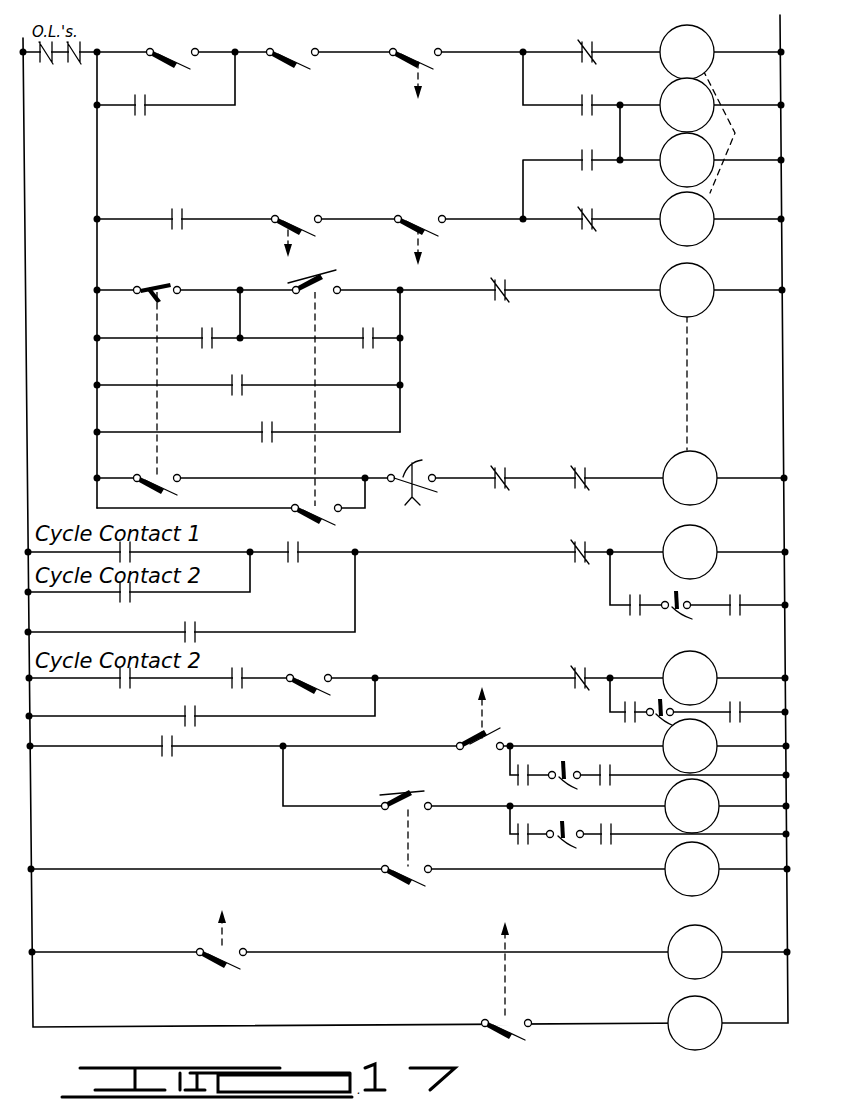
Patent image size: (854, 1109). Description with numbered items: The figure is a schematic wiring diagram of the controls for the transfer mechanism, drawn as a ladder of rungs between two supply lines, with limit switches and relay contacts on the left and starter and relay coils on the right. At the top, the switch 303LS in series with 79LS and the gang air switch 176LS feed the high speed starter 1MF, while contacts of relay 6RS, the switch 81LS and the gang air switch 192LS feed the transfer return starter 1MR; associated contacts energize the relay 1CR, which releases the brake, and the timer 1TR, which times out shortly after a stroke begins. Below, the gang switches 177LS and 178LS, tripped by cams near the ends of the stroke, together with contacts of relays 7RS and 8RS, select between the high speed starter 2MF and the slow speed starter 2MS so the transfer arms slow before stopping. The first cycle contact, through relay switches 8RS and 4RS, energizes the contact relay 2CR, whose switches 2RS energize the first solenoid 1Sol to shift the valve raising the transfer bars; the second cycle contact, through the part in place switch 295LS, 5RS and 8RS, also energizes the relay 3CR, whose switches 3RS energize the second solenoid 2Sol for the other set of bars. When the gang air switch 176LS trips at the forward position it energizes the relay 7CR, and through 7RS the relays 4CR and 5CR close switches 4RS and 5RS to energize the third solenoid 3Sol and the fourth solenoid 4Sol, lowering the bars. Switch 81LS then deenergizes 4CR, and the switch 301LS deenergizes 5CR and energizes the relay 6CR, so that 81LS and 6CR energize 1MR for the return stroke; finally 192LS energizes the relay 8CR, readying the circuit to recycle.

The limit switch 303LS is at (168, 39).
The limit switch 79LS is at (290, 37).
The gang air switch 176LS is at (413, 33).
The gang switch 81LS is at (295, 204).
The gang air switch 192LS is at (418, 200).
The gang switch 177LS is at (153, 276).
The gang switch 178LS is at (280, 278).
The part in place switch 295LS is at (312, 664).
The switch 301LS is at (385, 796).
The timer 1TR is at (548, 319).
The transfer return starter 1MR is at (588, 32).
The high speed starter 1MF is at (590, 86).
The brake release relay 1CR is at (687, 105).
The high speed starter 2MF is at (687, 290).
The slow speed starter 2MS is at (500, 274).
The relay switch 6RS is at (148, 96).
The relay switch 7RS is at (239, 376).
The relay switch 8RS is at (268, 412).
The relay switch 4RS is at (585, 532).
The relay switch 2RS is at (202, 625).
The relay switch 3RS is at (207, 710).
The relay switch 5RS is at (588, 656).
The 1 solenoid 1Sol is at (700, 613).
The 2 solenoid 2Sol is at (644, 704).
The 3 solenoid 3Sol is at (585, 781).
The 4 solenoid 4Sol is at (556, 827).
The contact relay 2CR is at (690, 552).
The relay 3CR is at (690, 678).
The relay 4CR is at (690, 746).
The relay 5CR is at (692, 806).
The relay 6CR is at (692, 869).
The contact relay 7CR is at (695, 952).
The relay 8CR is at (695, 1023).